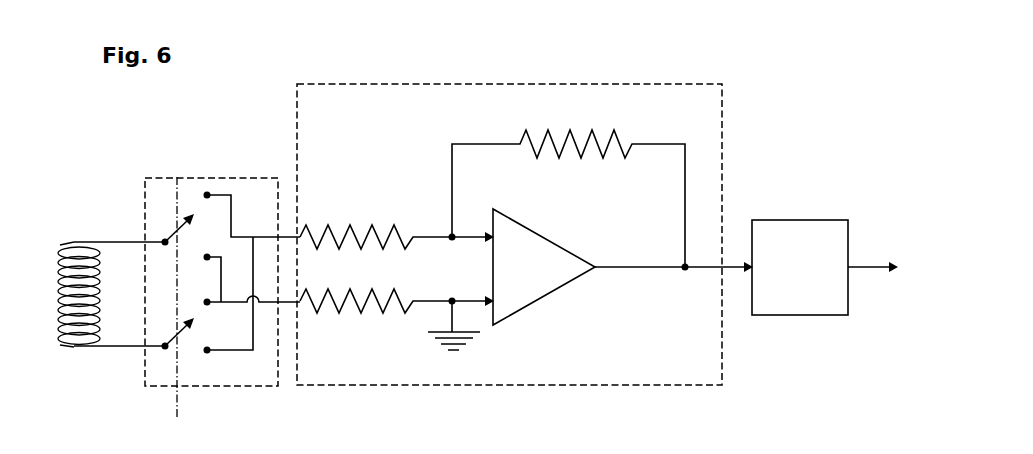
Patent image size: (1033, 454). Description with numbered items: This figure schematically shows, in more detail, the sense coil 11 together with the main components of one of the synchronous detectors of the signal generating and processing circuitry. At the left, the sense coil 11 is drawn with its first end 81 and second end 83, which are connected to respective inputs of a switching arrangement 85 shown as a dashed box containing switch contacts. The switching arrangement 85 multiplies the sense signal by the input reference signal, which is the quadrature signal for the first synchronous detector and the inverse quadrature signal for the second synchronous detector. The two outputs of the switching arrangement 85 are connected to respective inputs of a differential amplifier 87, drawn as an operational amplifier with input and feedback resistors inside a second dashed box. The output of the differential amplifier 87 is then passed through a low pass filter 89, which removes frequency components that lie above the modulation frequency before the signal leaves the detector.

The sense coil 11 is at (51, 270).
The first end 81 is at (88, 238).
The second end 83 is at (83, 348).
The switching arrangement 85 is at (205, 177).
The differential amplifier 87 is at (467, 83).
The low pass filter 89 is at (808, 219).